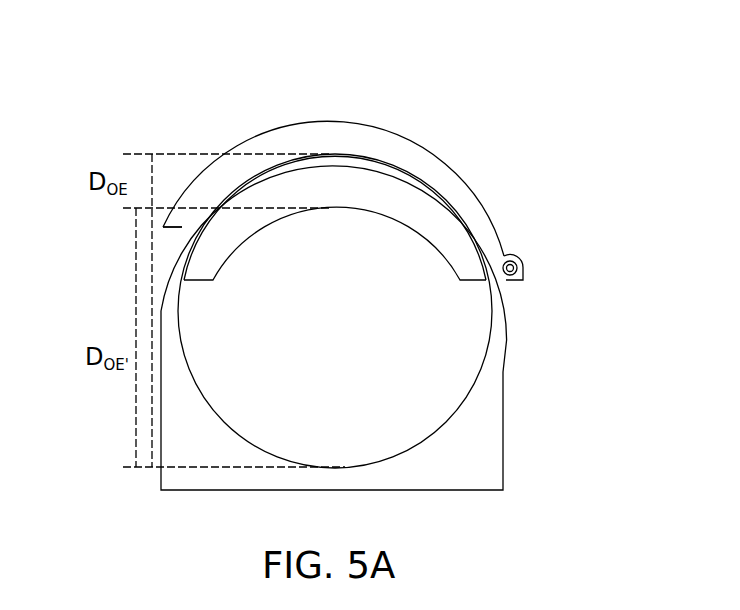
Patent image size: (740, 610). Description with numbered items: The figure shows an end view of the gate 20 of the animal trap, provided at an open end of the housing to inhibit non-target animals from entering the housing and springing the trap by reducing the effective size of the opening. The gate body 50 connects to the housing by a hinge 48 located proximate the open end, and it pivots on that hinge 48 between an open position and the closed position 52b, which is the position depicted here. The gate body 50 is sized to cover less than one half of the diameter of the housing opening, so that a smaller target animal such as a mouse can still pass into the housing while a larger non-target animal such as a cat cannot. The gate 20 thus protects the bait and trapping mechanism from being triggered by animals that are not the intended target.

The gate 20 is at (468, 182).
The hinge 48 is at (517, 258).
The gate body 50 is at (460, 250).
The closed position 52b is at (178, 125).